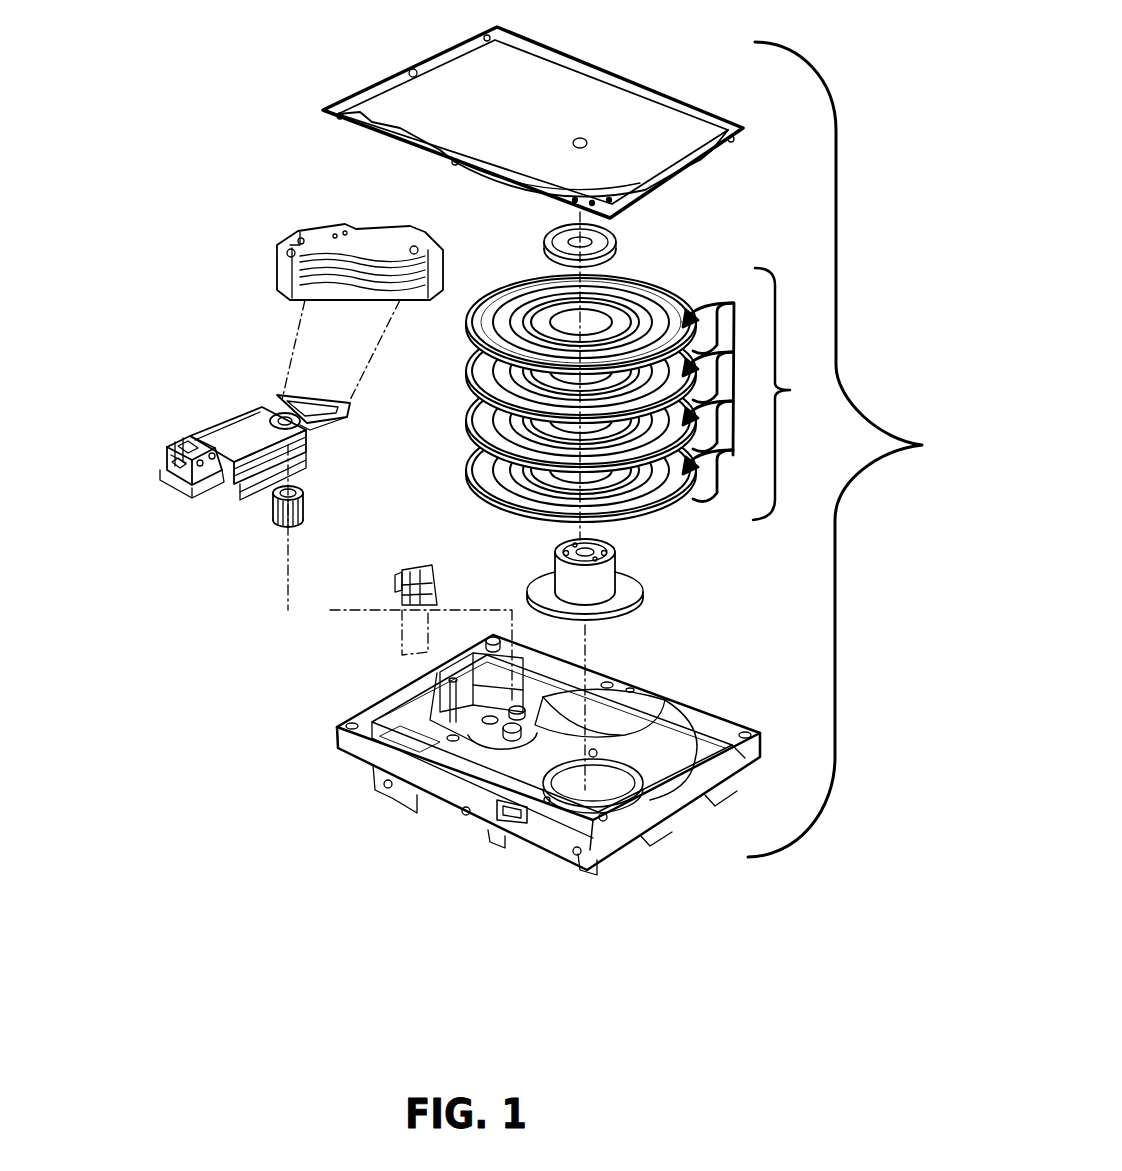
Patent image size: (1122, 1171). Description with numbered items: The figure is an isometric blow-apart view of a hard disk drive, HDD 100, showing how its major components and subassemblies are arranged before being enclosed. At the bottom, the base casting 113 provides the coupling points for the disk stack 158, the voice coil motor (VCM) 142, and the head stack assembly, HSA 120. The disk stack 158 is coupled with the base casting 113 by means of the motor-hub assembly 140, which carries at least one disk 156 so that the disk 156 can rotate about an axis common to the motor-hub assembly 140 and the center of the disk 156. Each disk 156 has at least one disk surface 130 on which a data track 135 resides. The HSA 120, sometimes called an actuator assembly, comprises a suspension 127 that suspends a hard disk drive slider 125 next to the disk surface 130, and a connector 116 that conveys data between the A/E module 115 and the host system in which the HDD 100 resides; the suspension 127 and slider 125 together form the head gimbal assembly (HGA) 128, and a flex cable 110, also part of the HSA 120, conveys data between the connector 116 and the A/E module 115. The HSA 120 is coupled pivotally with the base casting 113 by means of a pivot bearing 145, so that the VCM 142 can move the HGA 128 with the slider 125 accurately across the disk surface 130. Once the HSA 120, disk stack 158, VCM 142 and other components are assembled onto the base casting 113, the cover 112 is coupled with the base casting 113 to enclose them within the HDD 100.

The HDD 100 is at (926, 425).
The flex cable 110 is at (225, 413).
The cover 112 is at (628, 130).
The base casting 113 is at (352, 745).
The A/E module 115 is at (262, 400).
The connector 116 is at (183, 467).
The HSA 120 is at (200, 424).
The hard disk drive slider 125 is at (240, 483).
The suspension 127 is at (187, 433).
The head gimbal assembly 128 is at (270, 488).
The disk surface 130 is at (734, 303).
The data track 135 is at (530, 290).
The motor-hub assembly 140 is at (636, 588).
The voice coil motor 142 is at (275, 410).
The pivot bearing 145 is at (282, 532).
The disk 156 is at (467, 322).
The disk stack 158 is at (790, 390).